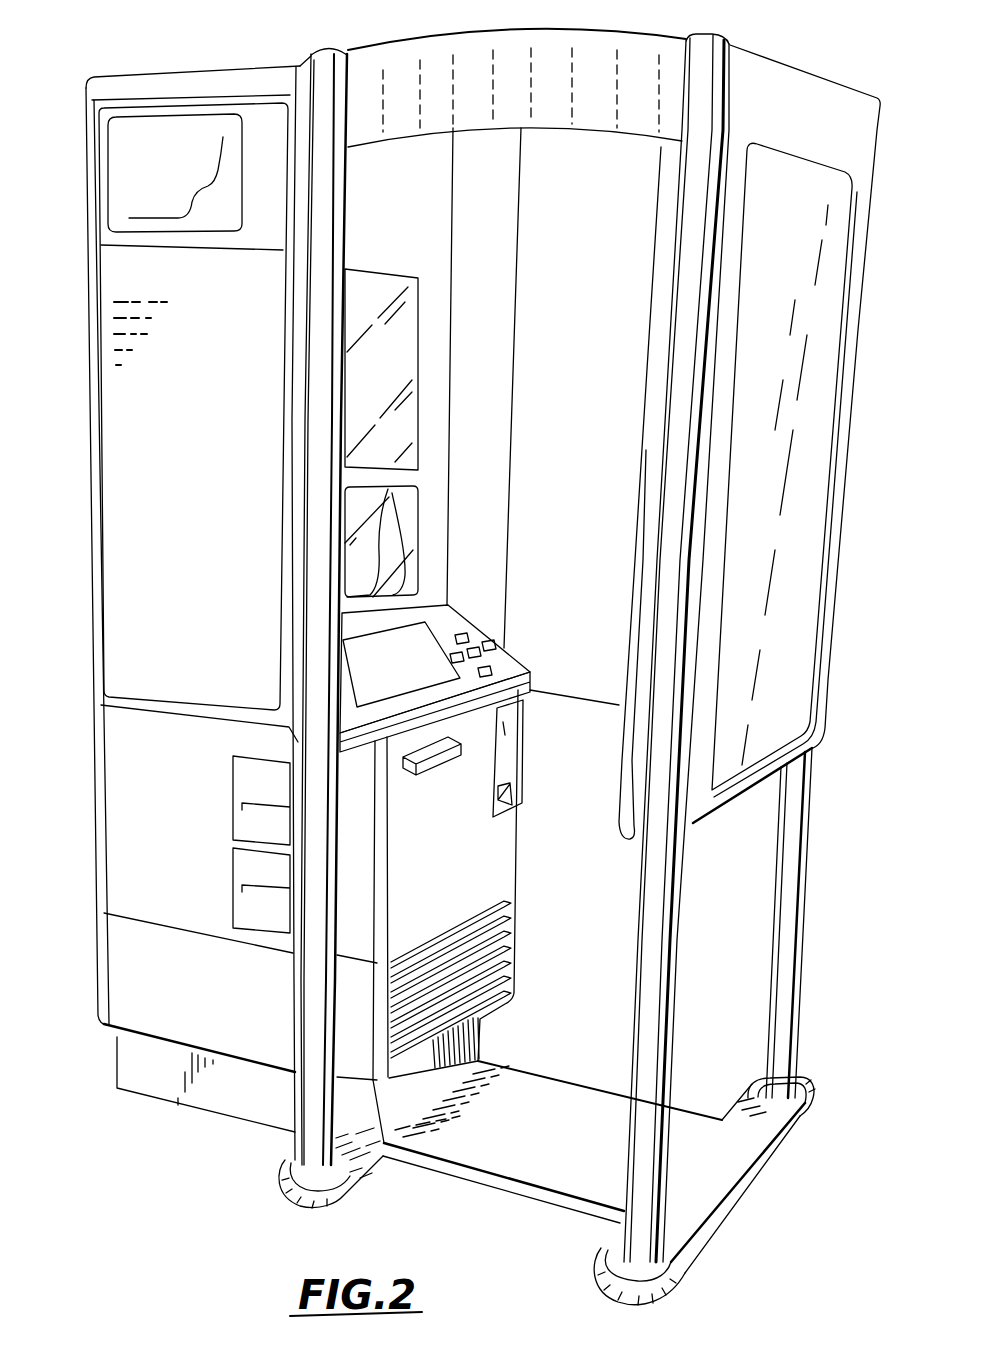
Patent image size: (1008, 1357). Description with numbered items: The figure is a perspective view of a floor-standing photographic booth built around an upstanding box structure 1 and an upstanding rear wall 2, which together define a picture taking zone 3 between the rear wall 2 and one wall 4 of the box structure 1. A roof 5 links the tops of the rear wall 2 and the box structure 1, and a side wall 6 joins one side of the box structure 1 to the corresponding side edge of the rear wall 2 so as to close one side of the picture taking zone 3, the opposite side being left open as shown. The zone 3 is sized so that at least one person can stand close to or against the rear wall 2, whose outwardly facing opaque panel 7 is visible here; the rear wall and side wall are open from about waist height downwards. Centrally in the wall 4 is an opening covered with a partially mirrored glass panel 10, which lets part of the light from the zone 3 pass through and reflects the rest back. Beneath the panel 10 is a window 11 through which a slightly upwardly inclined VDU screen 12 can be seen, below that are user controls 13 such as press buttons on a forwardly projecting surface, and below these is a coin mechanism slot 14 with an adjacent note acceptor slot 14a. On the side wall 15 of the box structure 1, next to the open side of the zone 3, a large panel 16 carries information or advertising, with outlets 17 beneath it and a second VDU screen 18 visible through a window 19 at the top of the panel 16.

The upstanding box structure 1 is at (454, 652).
The upstanding rear wall 2 is at (582, 652).
The picture taking zone 3 is at (559, 1042).
The wall of the box structure 4 is at (500, 635).
The roof 5 is at (602, 53).
The side wall 6 is at (593, 657).
The outwardly facing opaque panel 7 is at (818, 414).
The glass panel 10 is at (387, 420).
The window 11 is at (450, 529).
The VDU screen 12 is at (389, 530).
The user controls 13 is at (488, 649).
The coin mechanism slot 14 is at (512, 758).
The note acceptor slot 14a is at (441, 762).
The side wall of the box structure 15 is at (130, 409).
The large panel 16 is at (209, 594).
The outlets 17 is at (237, 872).
The second VDU screen 18 is at (112, 214).
The window 19 is at (96, 161).